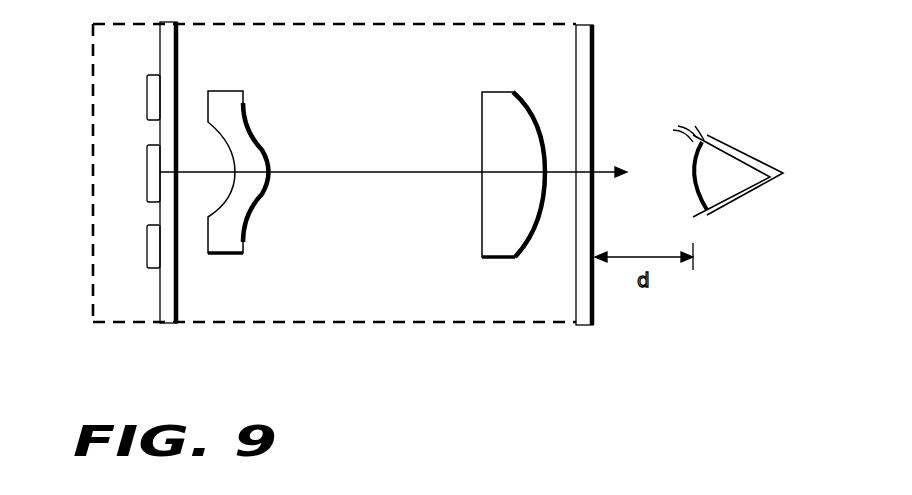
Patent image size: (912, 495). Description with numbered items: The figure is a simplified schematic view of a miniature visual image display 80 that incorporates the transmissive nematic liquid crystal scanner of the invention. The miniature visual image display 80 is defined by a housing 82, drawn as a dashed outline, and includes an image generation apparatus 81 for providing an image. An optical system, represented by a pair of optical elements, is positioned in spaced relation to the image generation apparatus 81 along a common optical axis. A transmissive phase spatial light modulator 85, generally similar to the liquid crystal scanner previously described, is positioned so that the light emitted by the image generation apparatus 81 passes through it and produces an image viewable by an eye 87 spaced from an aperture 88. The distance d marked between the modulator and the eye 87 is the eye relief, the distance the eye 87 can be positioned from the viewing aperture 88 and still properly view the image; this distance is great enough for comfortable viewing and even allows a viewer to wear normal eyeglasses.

The miniature visual image display 80 is at (355, 410).
The image generation apparatus 81 is at (147, 172).
The housing 82 is at (443, 341).
The transmissive phase spatial light modulator 85 is at (596, 80).
The eye 87 is at (735, 205).
The aperture 88 is at (682, 73).